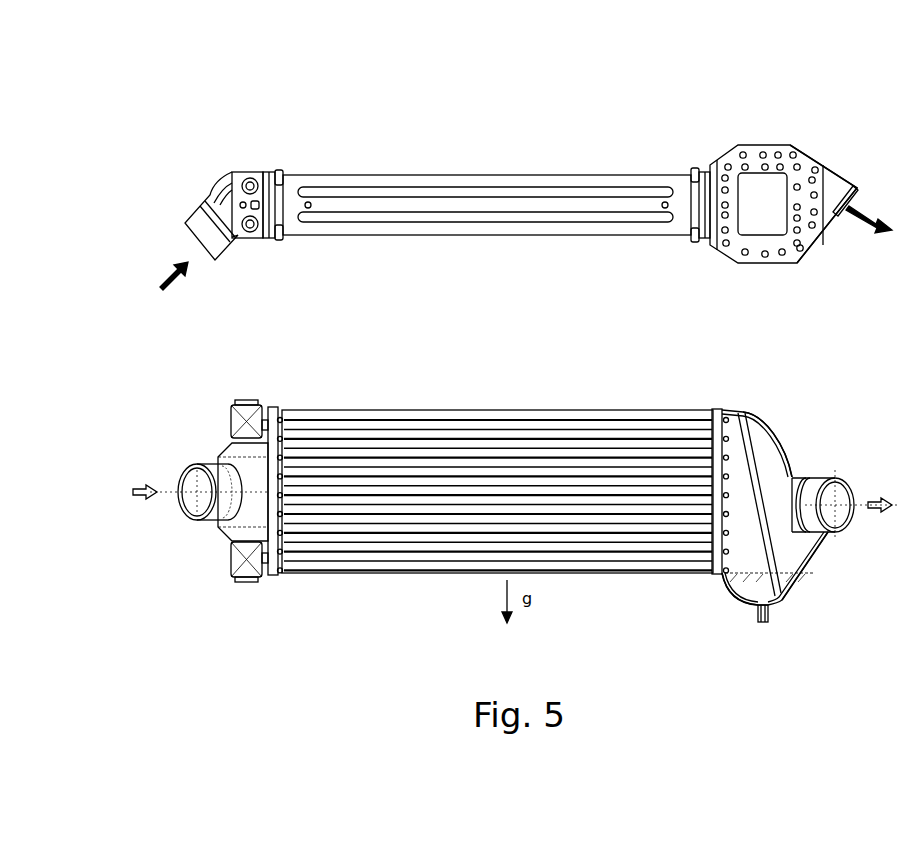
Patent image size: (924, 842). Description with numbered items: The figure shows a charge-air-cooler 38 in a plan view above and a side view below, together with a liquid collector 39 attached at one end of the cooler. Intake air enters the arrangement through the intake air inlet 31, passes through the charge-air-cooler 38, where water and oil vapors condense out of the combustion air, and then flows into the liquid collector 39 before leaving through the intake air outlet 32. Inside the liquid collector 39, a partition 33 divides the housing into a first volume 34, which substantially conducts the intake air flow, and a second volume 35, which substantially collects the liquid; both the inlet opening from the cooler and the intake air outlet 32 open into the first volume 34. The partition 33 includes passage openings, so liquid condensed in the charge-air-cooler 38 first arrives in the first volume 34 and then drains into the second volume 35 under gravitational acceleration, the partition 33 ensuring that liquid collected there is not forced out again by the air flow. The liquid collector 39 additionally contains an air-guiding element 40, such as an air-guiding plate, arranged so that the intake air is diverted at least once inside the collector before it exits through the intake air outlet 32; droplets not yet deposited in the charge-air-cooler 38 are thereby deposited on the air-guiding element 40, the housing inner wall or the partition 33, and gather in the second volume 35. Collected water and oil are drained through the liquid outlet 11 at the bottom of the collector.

The liquid outlet 11 is at (757, 612).
The intake air inlet 31 is at (207, 263).
The intake air outlet 32 is at (838, 218).
The partition 33 is at (796, 252).
The first volume 34 is at (737, 561).
The second volume 35 is at (726, 588).
The charge-air-cooler 38 is at (377, 173).
The liquid collector 39 is at (823, 170).
The air-guiding element 40 is at (763, 180).